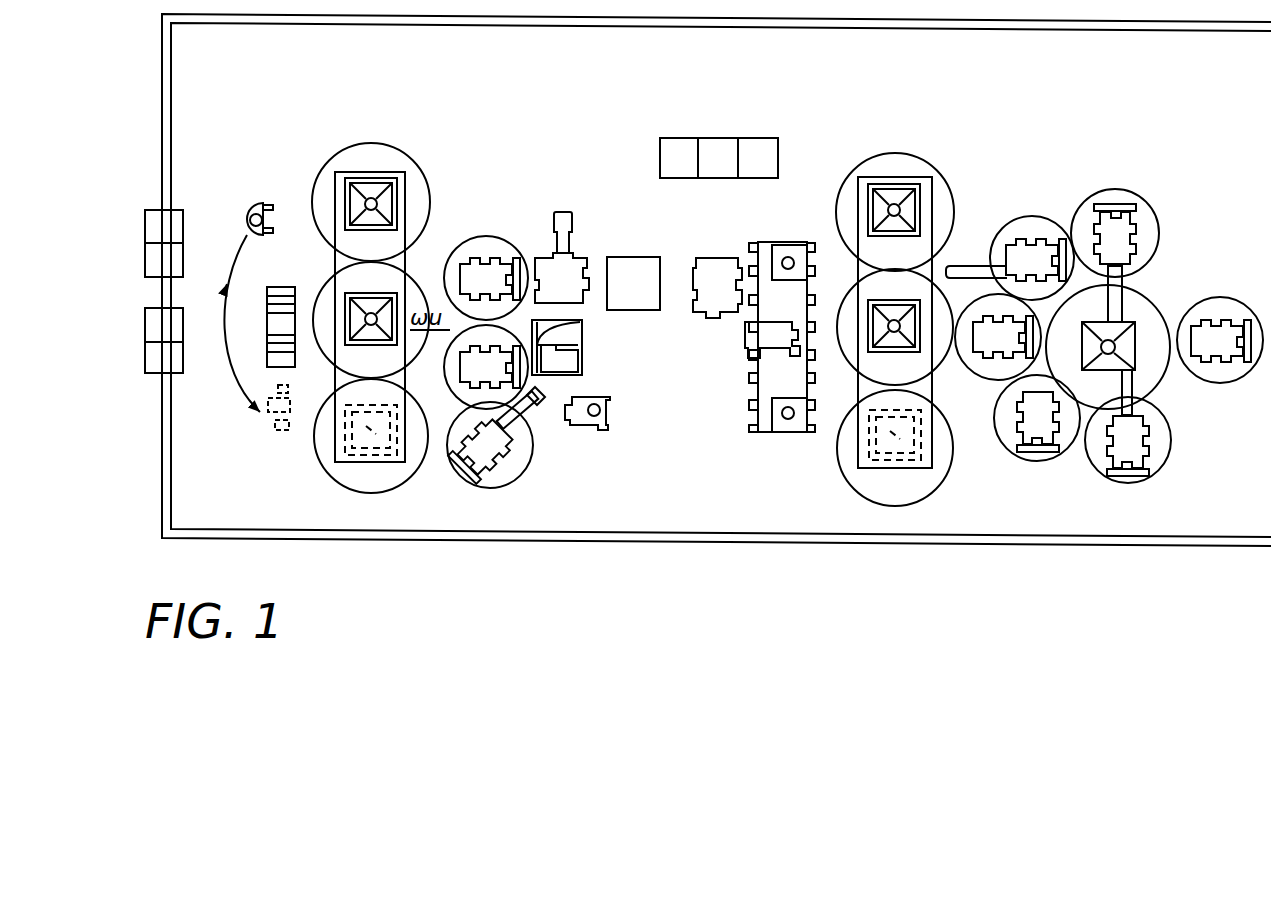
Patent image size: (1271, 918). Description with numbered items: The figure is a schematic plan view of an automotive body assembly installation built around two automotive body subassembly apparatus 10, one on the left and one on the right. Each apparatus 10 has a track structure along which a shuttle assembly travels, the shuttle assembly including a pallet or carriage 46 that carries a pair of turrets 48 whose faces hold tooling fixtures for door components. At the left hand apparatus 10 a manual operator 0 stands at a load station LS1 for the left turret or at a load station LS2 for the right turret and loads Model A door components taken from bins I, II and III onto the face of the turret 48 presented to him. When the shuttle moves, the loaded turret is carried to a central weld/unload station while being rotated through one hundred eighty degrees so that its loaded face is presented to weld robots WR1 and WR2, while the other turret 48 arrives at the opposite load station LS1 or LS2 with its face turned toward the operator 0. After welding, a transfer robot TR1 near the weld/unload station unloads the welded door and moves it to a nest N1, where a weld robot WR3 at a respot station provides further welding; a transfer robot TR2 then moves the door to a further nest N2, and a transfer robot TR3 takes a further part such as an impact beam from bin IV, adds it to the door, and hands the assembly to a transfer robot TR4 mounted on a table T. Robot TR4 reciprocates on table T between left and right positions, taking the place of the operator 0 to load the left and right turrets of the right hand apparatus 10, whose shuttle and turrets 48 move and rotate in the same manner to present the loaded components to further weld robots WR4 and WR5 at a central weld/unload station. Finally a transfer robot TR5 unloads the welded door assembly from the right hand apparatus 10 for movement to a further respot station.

The operator 0 is at (245, 205).
The automotive body subassembly apparatus 10 is at (325, 258).
The pallet or carriage 46 is at (388, 245).
The turret 48 is at (372, 178).
The bin I is at (142, 332).
The bin II is at (143, 255).
The bin III is at (263, 358).
The bin IV is at (705, 135).
The load station LS1 is at (302, 159).
The load station LS2 is at (315, 507).
The weld robot WR1 is at (465, 255).
The weld robot WR2 is at (505, 390).
The weld robot WR3 is at (610, 410).
The weld robot WR4 is at (1032, 236).
The weld robot WR5 is at (985, 360).
The transfer robot TR1 is at (494, 485).
The transfer robot TR2 is at (535, 255).
The transfer robot TR3 is at (708, 258).
The transfer robot TR4 is at (745, 337).
The transfer robot TR5 is at (1043, 455).
The nest N1 is at (582, 352).
The nest N2 is at (625, 258).
The table T is at (770, 387).